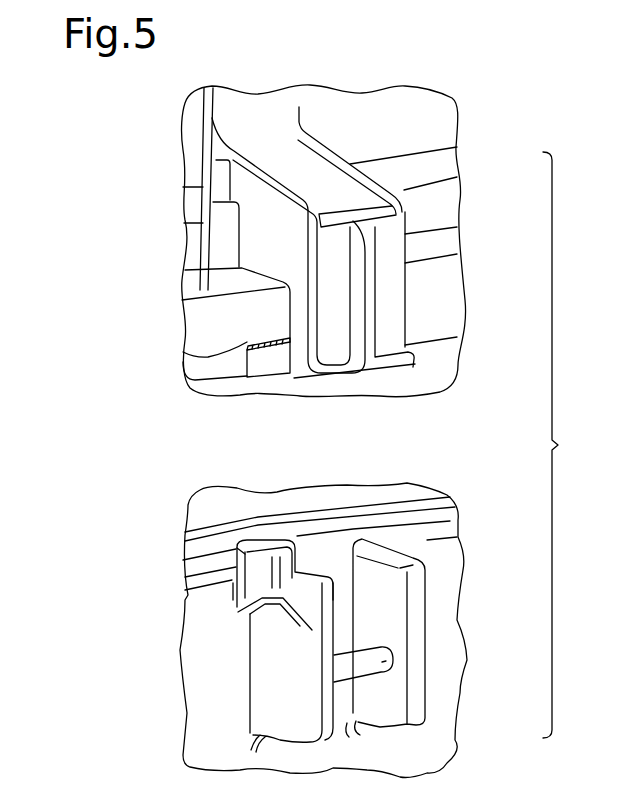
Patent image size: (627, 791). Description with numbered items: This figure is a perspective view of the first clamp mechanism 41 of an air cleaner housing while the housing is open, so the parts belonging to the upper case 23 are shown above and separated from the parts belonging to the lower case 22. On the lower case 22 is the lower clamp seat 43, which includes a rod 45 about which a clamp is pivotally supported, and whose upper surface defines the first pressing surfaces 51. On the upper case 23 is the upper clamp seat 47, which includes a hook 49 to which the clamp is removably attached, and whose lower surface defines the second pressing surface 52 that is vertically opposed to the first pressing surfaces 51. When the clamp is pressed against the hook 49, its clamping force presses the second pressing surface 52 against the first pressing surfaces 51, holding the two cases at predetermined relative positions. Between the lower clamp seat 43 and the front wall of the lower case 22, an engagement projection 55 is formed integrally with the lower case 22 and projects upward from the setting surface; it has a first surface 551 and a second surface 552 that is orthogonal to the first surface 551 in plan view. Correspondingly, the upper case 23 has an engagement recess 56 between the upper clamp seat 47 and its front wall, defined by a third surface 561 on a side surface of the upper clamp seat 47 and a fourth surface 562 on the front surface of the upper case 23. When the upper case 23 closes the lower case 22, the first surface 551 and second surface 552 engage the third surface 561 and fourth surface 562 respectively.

The lower case 22 is at (457, 749).
The upper case 23 is at (458, 121).
The first clamp mechanism 41 is at (569, 445).
The lower clamp seat 43 is at (417, 615).
The rod 45 is at (397, 665).
The upper clamp seat 47 is at (333, 148).
The hook 49 is at (362, 206).
The first pressing surfaces 51 is at (389, 558).
The second pressing surface 52 is at (395, 380).
The engagement projection 55 is at (237, 552).
The engagement recess 56 is at (183, 352).
The first surface 551 is at (308, 556).
The second surface 552 is at (260, 541).
The third surface 561 is at (295, 350).
The fourth surface 562 is at (274, 371).